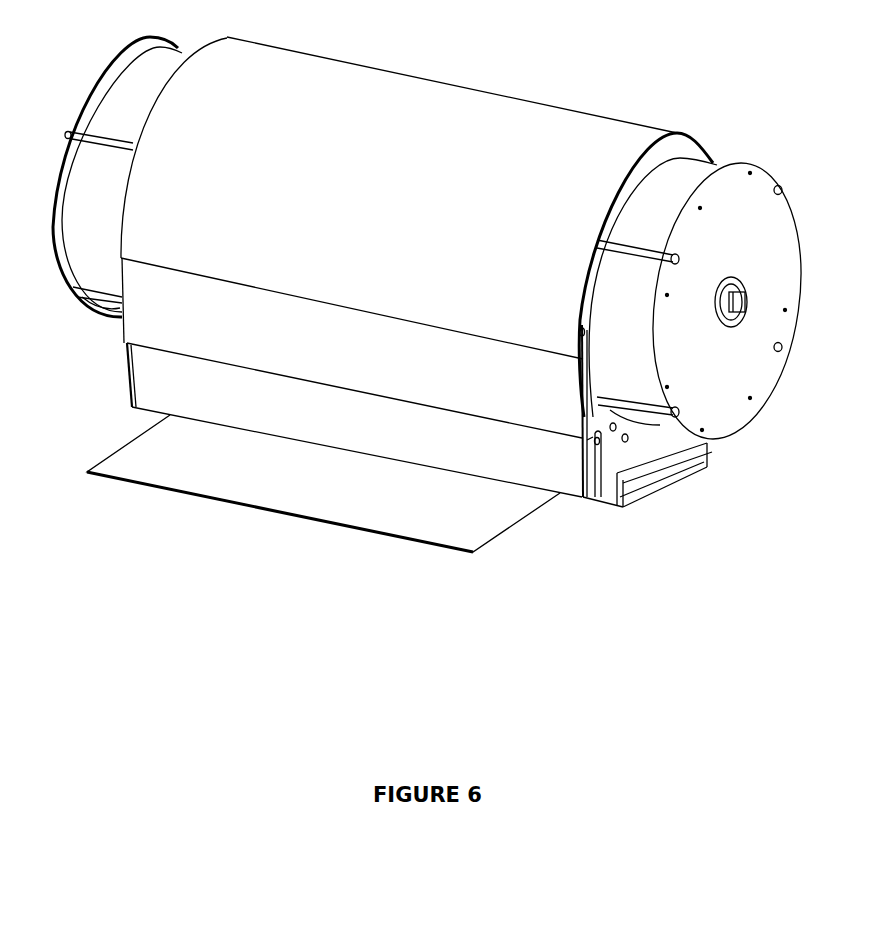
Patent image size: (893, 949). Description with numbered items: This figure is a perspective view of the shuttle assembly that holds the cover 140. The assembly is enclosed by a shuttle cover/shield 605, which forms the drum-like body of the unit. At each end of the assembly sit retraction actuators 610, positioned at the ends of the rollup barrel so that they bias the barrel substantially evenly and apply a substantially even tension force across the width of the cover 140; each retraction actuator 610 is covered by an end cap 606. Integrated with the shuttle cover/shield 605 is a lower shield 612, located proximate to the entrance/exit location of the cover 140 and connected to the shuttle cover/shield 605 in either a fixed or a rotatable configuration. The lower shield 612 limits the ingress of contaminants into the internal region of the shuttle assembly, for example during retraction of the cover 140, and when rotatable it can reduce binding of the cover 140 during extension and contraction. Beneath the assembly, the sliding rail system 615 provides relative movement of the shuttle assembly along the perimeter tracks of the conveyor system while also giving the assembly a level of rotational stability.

The shuttle cover/shield 605 is at (446, 92).
The end cap 606 is at (778, 223).
The retraction actuator 610 is at (63, 91).
The lower shield 612 is at (536, 472).
The sliding rail system 615 is at (678, 499).
The cover 140 is at (430, 530).